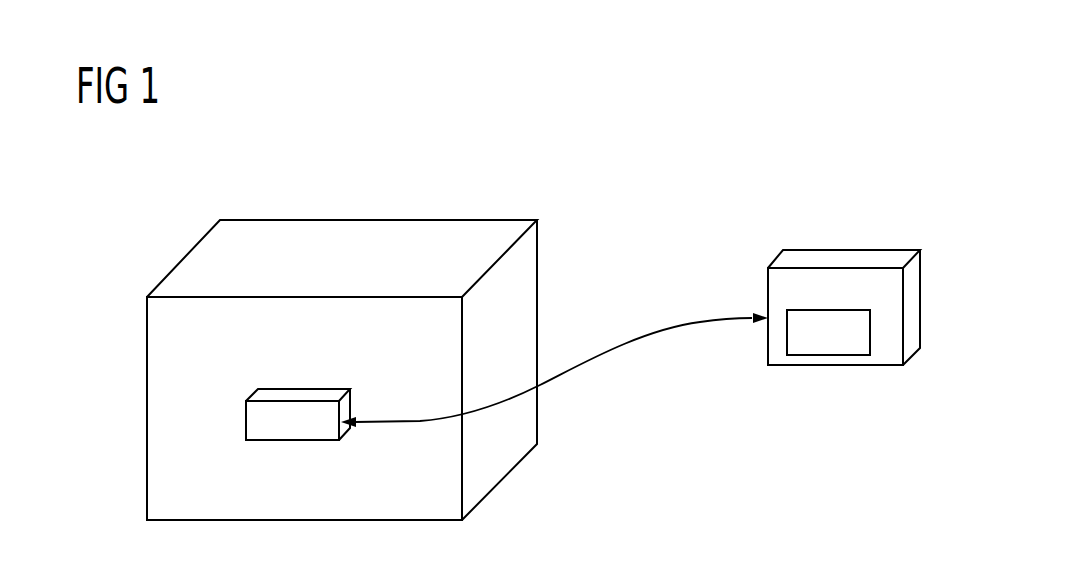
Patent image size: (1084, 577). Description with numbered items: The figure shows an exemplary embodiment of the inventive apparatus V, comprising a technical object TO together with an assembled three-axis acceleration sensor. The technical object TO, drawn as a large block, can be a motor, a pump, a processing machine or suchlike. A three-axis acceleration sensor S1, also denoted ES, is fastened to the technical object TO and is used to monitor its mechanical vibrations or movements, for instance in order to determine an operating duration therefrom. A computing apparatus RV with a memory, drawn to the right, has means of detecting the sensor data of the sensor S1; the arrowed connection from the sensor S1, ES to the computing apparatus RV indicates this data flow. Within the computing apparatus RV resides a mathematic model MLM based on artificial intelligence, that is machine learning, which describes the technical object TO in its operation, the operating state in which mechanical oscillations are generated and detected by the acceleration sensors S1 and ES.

The apparatus V is at (750, 157).
The technical object TO is at (147, 410).
The three-axis acceleration sensor S1 is at (298, 481).
The acceleration sensor ES is at (296, 440).
The computing apparatus RV is at (851, 250).
The mathematic model MLM is at (829, 355).